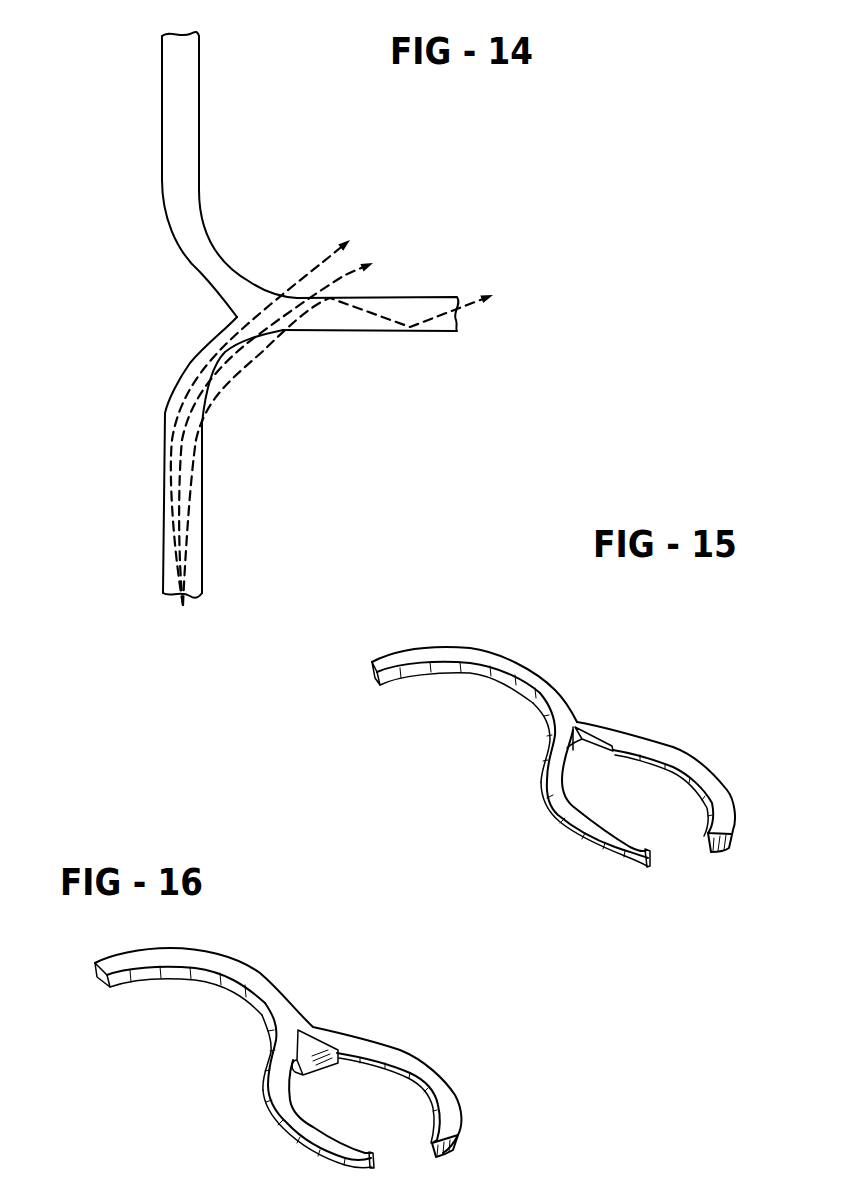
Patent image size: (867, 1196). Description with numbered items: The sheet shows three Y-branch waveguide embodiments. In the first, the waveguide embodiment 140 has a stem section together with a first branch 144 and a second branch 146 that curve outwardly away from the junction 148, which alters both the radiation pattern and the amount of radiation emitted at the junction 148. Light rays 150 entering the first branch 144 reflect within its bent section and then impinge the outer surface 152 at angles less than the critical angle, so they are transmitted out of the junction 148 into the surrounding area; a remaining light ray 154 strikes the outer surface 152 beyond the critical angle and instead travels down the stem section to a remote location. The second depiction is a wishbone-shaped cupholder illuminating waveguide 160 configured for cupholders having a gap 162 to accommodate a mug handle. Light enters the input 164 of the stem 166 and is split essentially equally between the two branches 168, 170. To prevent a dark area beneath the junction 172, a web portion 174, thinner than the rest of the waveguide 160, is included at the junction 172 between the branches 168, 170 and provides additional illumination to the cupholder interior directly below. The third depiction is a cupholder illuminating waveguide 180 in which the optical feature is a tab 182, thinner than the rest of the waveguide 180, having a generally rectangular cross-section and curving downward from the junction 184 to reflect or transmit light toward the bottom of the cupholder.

In FIG. 14, the waveguide embodiment 140 is at (258, 153).
In FIG. 14, the first branch 144 is at (140, 420).
In FIG. 14, the second branch 146 is at (128, 178).
In FIG. 14, the junction 148 is at (242, 380).
In FIG. 14, the light rays 150 is at (363, 263).
In FIG. 14, the outer surface 152 is at (238, 272).
In FIG. 14, the light ray 154 is at (462, 303).
In FIG. 15, the cupholder illuminating waveguide 160 is at (708, 683).
In FIG. 15, the gap 162 is at (678, 860).
In FIG. 15, the input 164 is at (370, 667).
In FIG. 15, the stem 166 is at (482, 655).
In FIG. 15, the branch 168 is at (709, 773).
In FIG. 15, the branch 170 is at (570, 822).
In FIG. 15, the junction 172 is at (536, 737).
In FIG. 15, the web portion 174 is at (576, 726).
In FIG. 16, the cupholder illuminating waveguide 180 is at (433, 983).
In FIG. 16, the tab 182 is at (310, 1043).
In FIG. 16, the junction 184 is at (266, 1033).